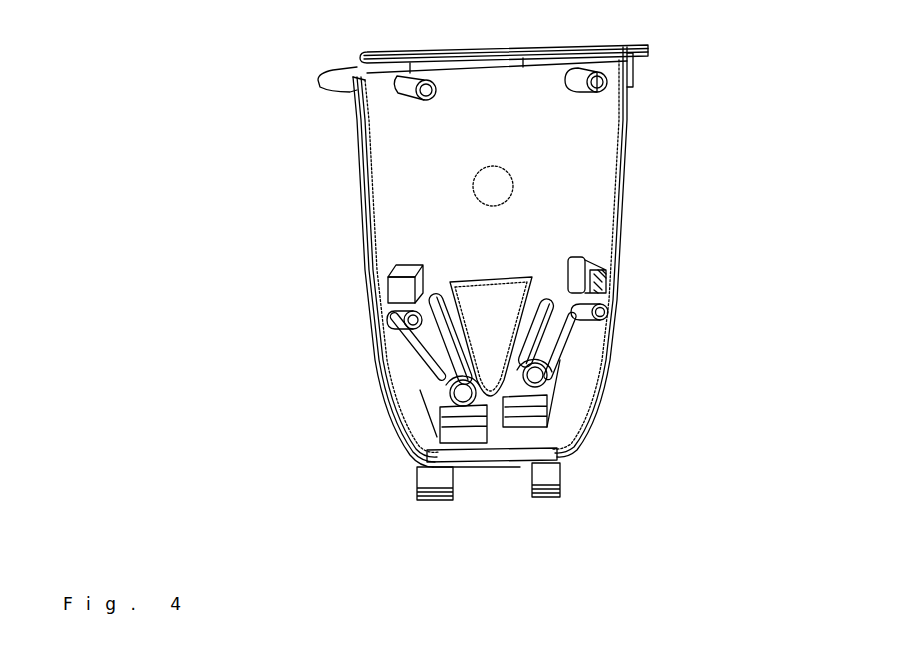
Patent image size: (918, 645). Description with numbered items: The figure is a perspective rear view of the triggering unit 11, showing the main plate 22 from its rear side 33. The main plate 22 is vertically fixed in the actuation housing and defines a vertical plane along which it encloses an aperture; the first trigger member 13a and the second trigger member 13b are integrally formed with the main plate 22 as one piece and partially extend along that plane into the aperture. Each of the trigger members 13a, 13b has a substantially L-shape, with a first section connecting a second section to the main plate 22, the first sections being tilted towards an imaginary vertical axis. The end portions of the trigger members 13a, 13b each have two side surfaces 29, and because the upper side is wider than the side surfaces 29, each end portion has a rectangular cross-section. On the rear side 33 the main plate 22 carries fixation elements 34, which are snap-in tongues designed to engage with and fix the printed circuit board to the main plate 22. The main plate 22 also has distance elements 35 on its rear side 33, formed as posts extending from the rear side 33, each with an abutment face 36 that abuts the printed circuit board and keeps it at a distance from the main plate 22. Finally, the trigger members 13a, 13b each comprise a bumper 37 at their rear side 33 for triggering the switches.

The triggering unit 11 is at (693, 80).
The main plate 22 is at (605, 200).
The rear side 33 is at (408, 207).
The fixation element 34 is at (393, 288).
The distance element 35 is at (410, 83).
The abutment face 36 is at (430, 95).
The bumper 37 is at (460, 400).
The side surface 29 is at (440, 425).
The first trigger member 13a is at (550, 340).
The second trigger member 13b is at (423, 357).